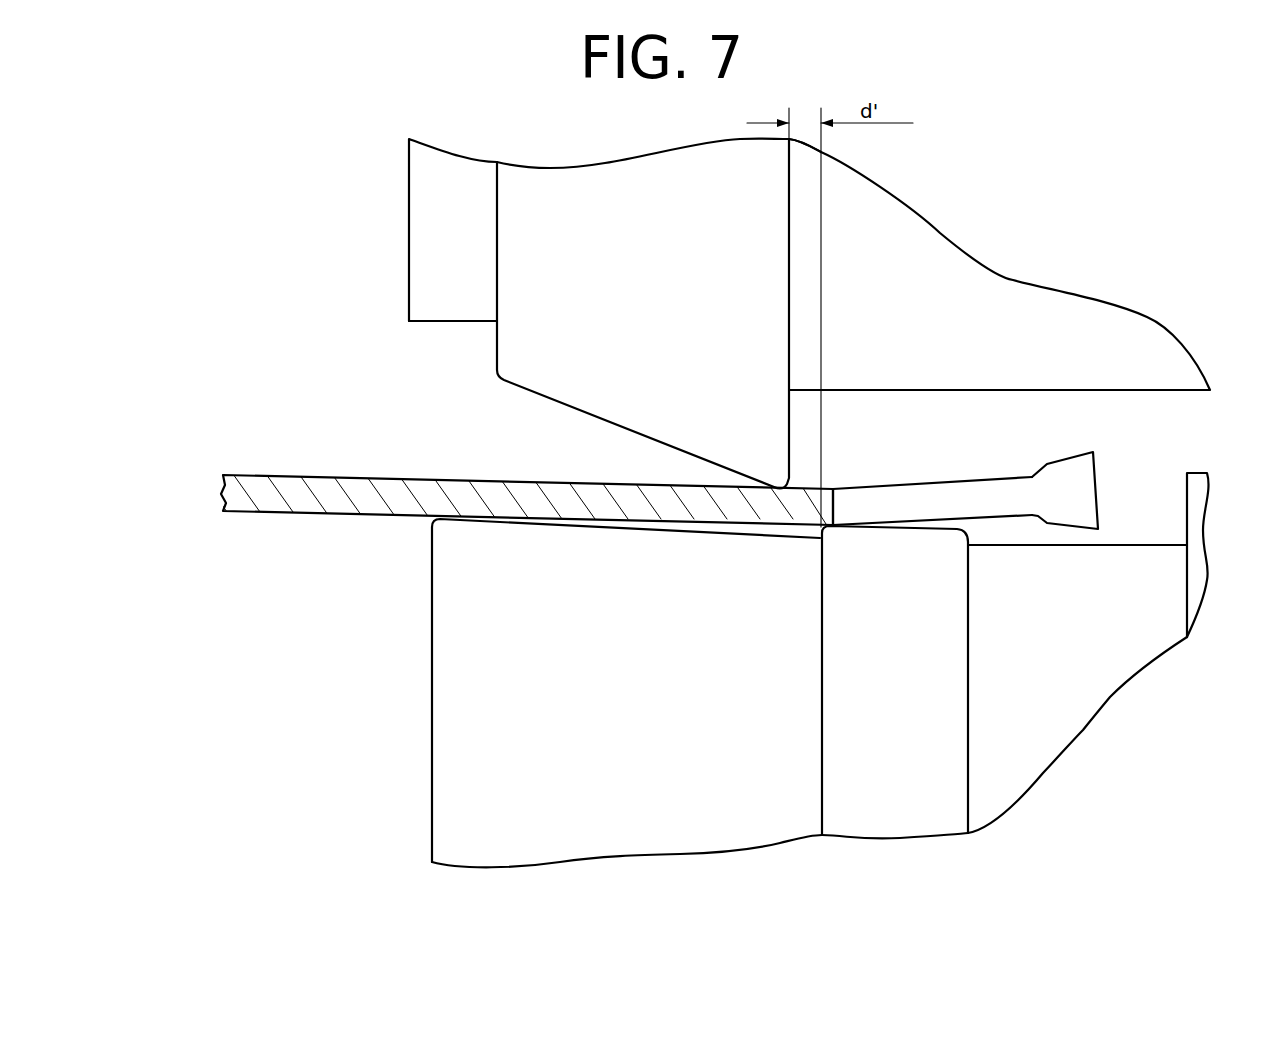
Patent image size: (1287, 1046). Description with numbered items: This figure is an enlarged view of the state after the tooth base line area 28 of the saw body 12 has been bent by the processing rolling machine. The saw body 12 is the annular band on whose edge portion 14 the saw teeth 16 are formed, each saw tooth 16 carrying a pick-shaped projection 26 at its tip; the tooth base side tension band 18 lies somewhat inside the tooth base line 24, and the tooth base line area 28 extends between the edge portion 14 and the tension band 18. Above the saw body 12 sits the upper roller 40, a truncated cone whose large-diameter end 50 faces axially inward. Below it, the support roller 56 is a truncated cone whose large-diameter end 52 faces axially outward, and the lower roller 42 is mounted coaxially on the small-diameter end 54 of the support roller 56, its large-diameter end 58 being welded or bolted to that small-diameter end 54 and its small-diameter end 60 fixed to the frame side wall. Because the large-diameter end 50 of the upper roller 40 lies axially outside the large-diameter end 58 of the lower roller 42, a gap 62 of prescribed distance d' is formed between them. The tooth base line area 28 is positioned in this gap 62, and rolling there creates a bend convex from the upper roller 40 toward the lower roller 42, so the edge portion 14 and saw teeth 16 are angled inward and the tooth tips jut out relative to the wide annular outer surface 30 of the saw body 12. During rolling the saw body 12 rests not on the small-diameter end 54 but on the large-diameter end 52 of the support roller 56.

The saw body 12 is at (675, 646).
The edge portion 14 is at (834, 465).
The saw teeth 16 is at (933, 503).
The tooth base side tension band 18 is at (598, 508).
The tooth base line 24 is at (833, 516).
The pick-shaped projection 26 is at (1075, 495).
The tooth base line area 28 is at (807, 517).
The wide annular outer surface 30 is at (375, 516).
The upper roller 40 is at (478, 352).
The lower roller 42 is at (776, 689).
The large-diameter end of upper roller 50 is at (767, 245).
The large-diameter end of support roller 52 is at (460, 795).
The small-diameter end of support roller 54 is at (802, 676).
The support roller 56 is at (757, 689).
The large-diameter end of lower roller 58 is at (835, 722).
The small-diameter end of lower roller 60 is at (955, 707).
The gap 62 is at (806, 465).